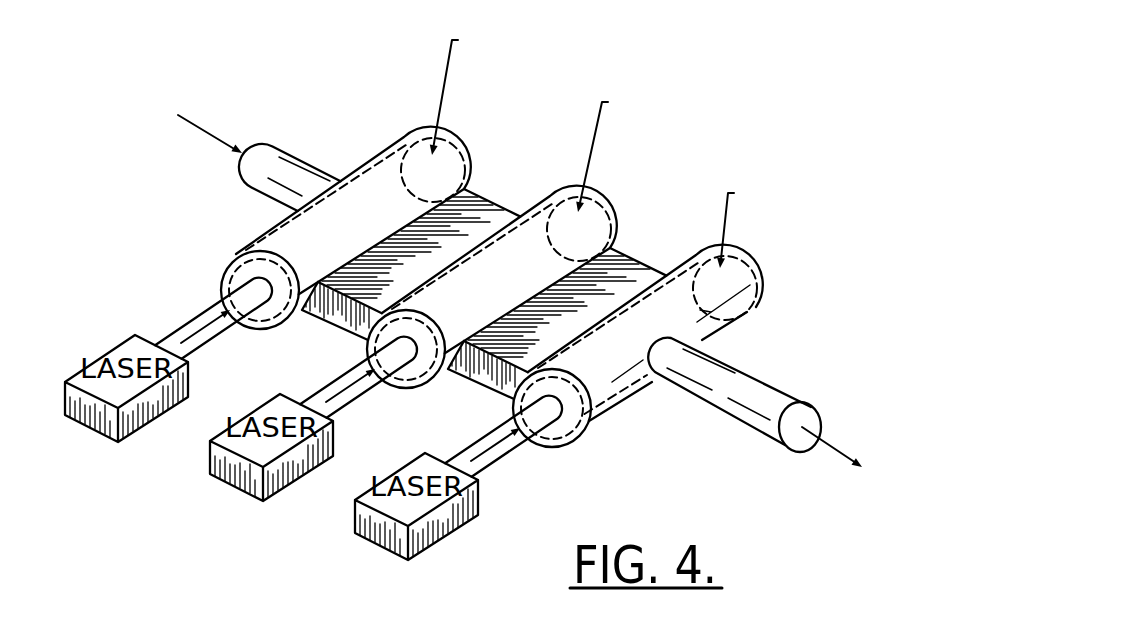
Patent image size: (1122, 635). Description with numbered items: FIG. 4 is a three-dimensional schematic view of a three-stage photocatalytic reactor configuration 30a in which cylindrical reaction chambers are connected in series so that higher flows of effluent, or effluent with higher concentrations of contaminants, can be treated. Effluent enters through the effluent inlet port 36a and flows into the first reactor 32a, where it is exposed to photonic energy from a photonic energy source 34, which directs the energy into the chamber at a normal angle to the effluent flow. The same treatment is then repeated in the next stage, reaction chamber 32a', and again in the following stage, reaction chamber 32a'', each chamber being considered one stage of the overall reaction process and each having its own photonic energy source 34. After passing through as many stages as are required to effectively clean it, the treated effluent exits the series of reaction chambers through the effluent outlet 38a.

The photocatalytic reactor configuration 30a is at (863, 52).
The first reactor 32a is at (346, 217).
The second-stage reaction chamber 32a' is at (492, 270).
The third-stage reaction chamber 32a'' is at (638, 329).
The photonic energy source 34 is at (113, 430).
The effluent inlet port 36a is at (273, 195).
The effluent outlet 38a is at (738, 377).